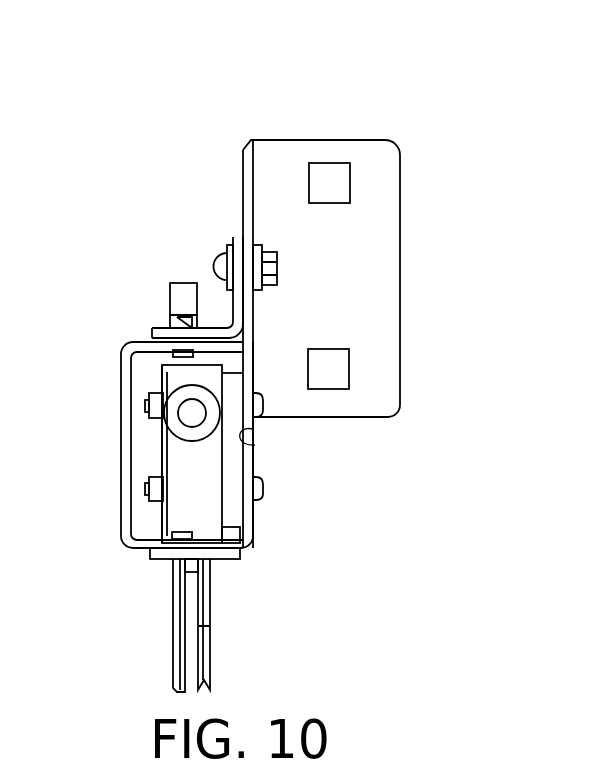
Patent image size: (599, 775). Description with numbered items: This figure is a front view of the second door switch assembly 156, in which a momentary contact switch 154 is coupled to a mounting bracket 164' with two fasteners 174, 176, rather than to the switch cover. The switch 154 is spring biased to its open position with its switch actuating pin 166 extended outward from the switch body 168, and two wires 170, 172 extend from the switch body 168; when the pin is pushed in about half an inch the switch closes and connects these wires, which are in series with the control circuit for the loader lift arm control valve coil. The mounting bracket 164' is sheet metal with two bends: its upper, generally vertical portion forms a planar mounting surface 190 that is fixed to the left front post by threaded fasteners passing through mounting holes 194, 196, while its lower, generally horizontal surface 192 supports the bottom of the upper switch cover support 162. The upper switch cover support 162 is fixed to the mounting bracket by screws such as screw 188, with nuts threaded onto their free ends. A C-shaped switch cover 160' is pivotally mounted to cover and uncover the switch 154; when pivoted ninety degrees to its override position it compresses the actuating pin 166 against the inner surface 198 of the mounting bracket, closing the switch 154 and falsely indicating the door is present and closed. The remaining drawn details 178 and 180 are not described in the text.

The door switch assembly 156 is at (284, 88).
The mounting hole 194 is at (330, 180).
The planar mounting surface 190 is at (347, 249).
The mounting hole 196 is at (333, 371).
The screw 188 is at (218, 270).
The post 178 is at (167, 316).
The upper switch cover support 162 is at (152, 330).
The mounting bracket 164' is at (264, 360).
The switch cover 160' is at (136, 445).
The fastener 174 is at (147, 404).
The switch actuating pin 166 is at (182, 413).
The switch body 168 is at (163, 448).
The switch 154 is at (185, 476).
The fastener 176 is at (148, 491).
The inner surface 198 is at (255, 445).
The horizontal surface 192 is at (240, 552).
The spacer 180 is at (190, 566).
The wire 170 is at (172, 610).
The wire 172 is at (210, 626).